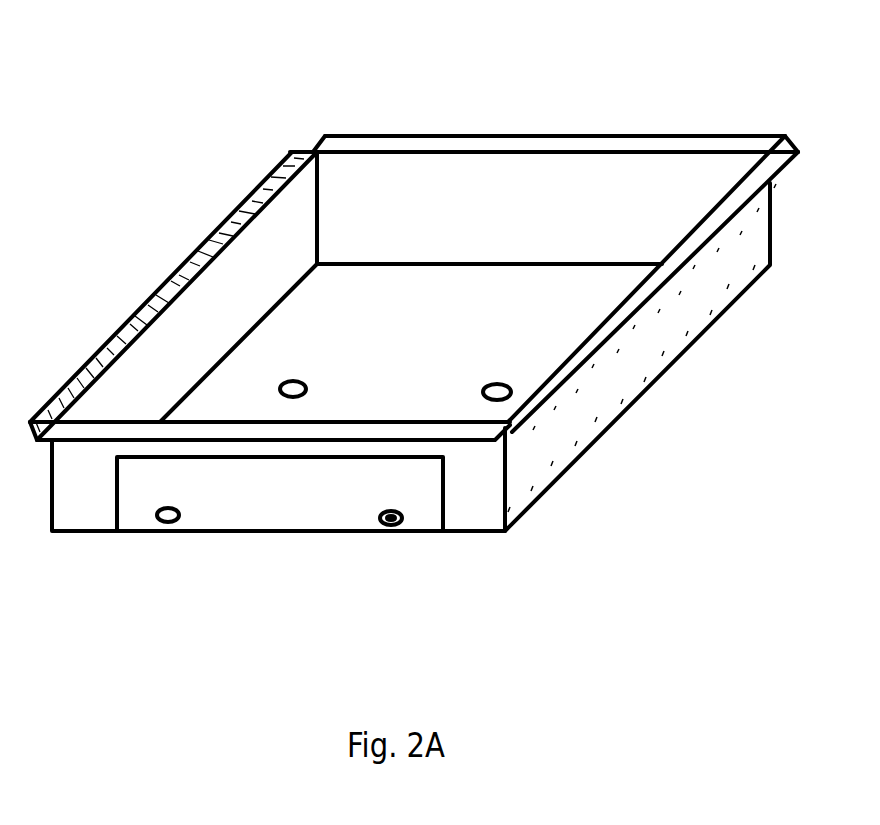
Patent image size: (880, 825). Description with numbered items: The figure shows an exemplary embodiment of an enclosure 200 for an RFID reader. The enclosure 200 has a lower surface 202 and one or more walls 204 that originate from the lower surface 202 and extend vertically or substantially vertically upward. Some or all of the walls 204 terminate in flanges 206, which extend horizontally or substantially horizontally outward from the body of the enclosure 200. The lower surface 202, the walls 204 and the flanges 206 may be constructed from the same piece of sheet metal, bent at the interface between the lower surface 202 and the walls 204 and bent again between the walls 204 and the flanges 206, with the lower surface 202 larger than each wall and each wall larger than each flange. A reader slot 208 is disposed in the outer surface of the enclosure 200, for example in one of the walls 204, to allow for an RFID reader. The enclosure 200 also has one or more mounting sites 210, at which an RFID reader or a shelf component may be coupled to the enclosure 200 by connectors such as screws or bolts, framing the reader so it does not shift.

The enclosure 200 is at (413, 344).
The lower surface 202 is at (292, 358).
The walls 204 is at (548, 193).
The flanges 206 is at (363, 152).
The reader slot 208 is at (258, 498).
The mounting sites 210 is at (385, 530).